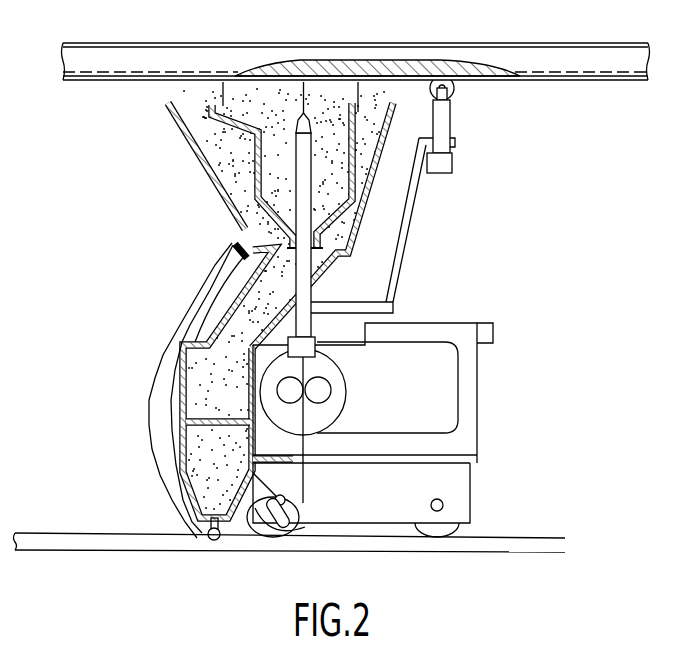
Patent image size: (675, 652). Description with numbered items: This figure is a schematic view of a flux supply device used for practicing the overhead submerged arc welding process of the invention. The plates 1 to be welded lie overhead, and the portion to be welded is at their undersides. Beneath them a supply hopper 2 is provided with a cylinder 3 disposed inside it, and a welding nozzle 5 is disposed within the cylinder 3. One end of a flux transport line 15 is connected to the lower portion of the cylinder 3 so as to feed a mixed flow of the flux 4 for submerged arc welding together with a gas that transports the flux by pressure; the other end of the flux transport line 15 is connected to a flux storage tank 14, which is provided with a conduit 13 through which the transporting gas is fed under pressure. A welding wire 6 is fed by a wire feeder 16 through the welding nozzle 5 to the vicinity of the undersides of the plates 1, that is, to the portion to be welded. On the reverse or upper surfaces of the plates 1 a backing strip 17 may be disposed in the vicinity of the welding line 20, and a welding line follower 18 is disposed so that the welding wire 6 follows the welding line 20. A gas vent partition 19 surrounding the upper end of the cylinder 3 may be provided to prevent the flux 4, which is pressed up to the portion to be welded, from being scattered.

The plates 1 is at (610, 60).
The supply hopper 2 is at (207, 173).
The cylinder 3 is at (255, 143).
The flux 4 is at (257, 100).
The welding nozzle 5 is at (303, 270).
The welding wire 6 is at (303, 473).
The conduit 13 is at (273, 513).
The flux storage tank 14 is at (182, 450).
The flux transport line 15 is at (157, 383).
The wire feeder 16 is at (327, 367).
The backing strip 17 is at (560, 45).
The welding line follower 18 is at (442, 127).
The gas vent partition 19 is at (223, 84).
The welding line 20 is at (473, 82).